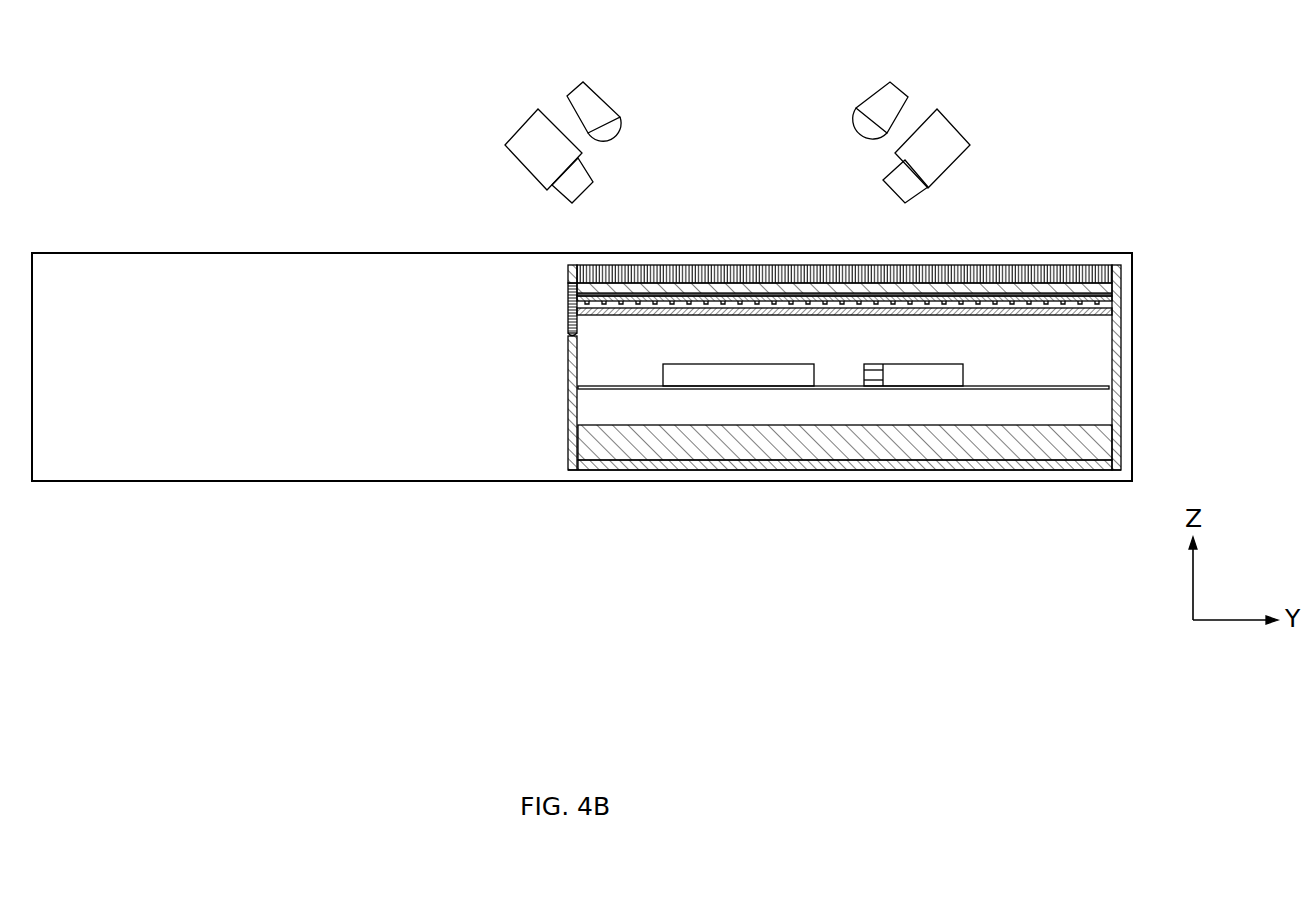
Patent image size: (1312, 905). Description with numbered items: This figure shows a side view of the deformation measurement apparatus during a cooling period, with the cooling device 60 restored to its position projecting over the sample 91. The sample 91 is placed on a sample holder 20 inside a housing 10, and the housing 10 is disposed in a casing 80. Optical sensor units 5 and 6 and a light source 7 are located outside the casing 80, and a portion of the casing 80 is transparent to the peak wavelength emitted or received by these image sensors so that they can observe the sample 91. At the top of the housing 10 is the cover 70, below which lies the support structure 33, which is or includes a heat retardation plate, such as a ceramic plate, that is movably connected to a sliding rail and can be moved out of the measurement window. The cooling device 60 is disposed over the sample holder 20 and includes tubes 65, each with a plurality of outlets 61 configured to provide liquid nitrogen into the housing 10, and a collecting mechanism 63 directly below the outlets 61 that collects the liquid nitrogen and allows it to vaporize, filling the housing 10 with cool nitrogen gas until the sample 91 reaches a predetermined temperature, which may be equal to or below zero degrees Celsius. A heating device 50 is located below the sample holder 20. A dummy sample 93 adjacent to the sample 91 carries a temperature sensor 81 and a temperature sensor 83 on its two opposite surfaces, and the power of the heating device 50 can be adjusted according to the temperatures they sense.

The optical sensor unit 5 is at (520, 127).
The optical sensor unit 6 is at (952, 125).
The light source 7 is at (602, 98).
The housing 10 is at (568, 409).
The sample holder 20 is at (628, 390).
The support structure 33 is at (1063, 290).
The heating device 50 is at (1088, 425).
The cooling device 60 is at (764, 297).
The outlet 61 is at (580, 299).
The collecting mechanism 63 is at (580, 310).
The tube 65 is at (580, 295).
The cover 70 is at (1103, 263).
The casing 80 is at (1133, 277).
The temperature sensor 81 is at (865, 368).
The temperature sensor 83 is at (877, 383).
The sample 91 is at (738, 374).
The dummy sample 93 is at (937, 373).